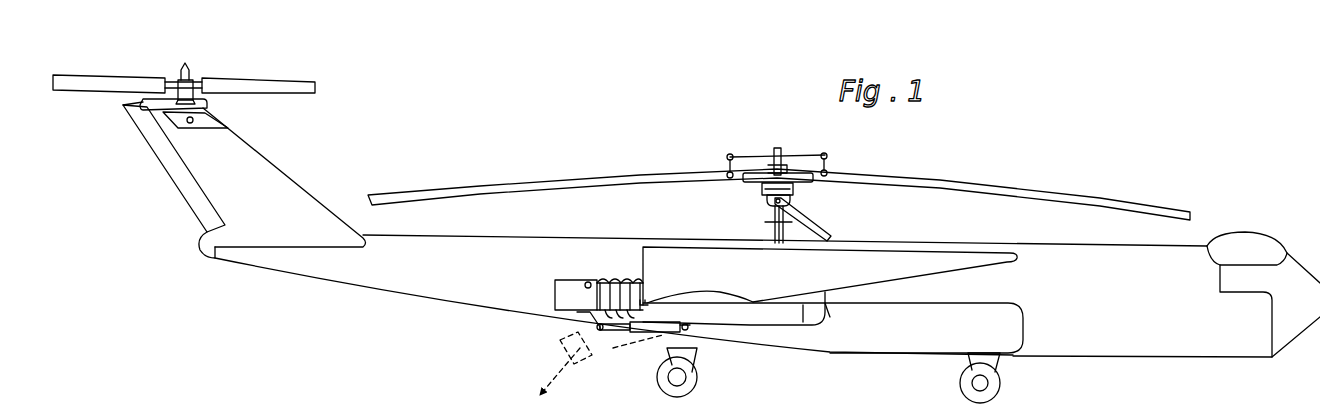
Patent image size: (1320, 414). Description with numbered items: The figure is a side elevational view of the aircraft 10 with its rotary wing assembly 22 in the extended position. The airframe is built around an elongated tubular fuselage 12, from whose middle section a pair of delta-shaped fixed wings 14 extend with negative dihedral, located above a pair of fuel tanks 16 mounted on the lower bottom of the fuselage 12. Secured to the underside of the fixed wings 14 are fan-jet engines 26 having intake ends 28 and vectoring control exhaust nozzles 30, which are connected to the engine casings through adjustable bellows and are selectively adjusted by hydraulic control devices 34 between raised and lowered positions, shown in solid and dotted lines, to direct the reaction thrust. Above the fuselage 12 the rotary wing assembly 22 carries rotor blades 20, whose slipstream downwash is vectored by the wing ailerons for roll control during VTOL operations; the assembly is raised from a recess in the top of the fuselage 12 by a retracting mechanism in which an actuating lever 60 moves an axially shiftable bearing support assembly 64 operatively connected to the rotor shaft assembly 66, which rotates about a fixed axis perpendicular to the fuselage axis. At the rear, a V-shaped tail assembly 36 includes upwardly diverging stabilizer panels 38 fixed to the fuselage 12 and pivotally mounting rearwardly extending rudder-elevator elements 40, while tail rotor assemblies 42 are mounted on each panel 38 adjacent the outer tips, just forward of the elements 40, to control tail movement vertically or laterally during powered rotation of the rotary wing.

The aircraft 10 is at (1150, 190).
The fuselage 12 is at (1113, 328).
The fixed wings 14 is at (890, 262).
The fuel tanks 16 is at (915, 337).
The rotor blades 20 is at (487, 187).
The rotary wing assembly 22 is at (730, 143).
The fan-jet engines 26 is at (718, 312).
The intake ends 28 is at (830, 317).
The exhaust nozzles 30 is at (572, 295).
The hydraulic control devices 34 is at (657, 340).
The tail assembly 36 is at (338, 158).
The stabilizer panels 38 is at (270, 180).
The rudder-elevator elements 40 is at (178, 175).
The tail rotor assemblies 42 is at (247, 72).
The actuating lever 60 is at (817, 223).
The bearing support assembly 64 is at (763, 197).
The rotor shaft assembly 66 is at (773, 230).